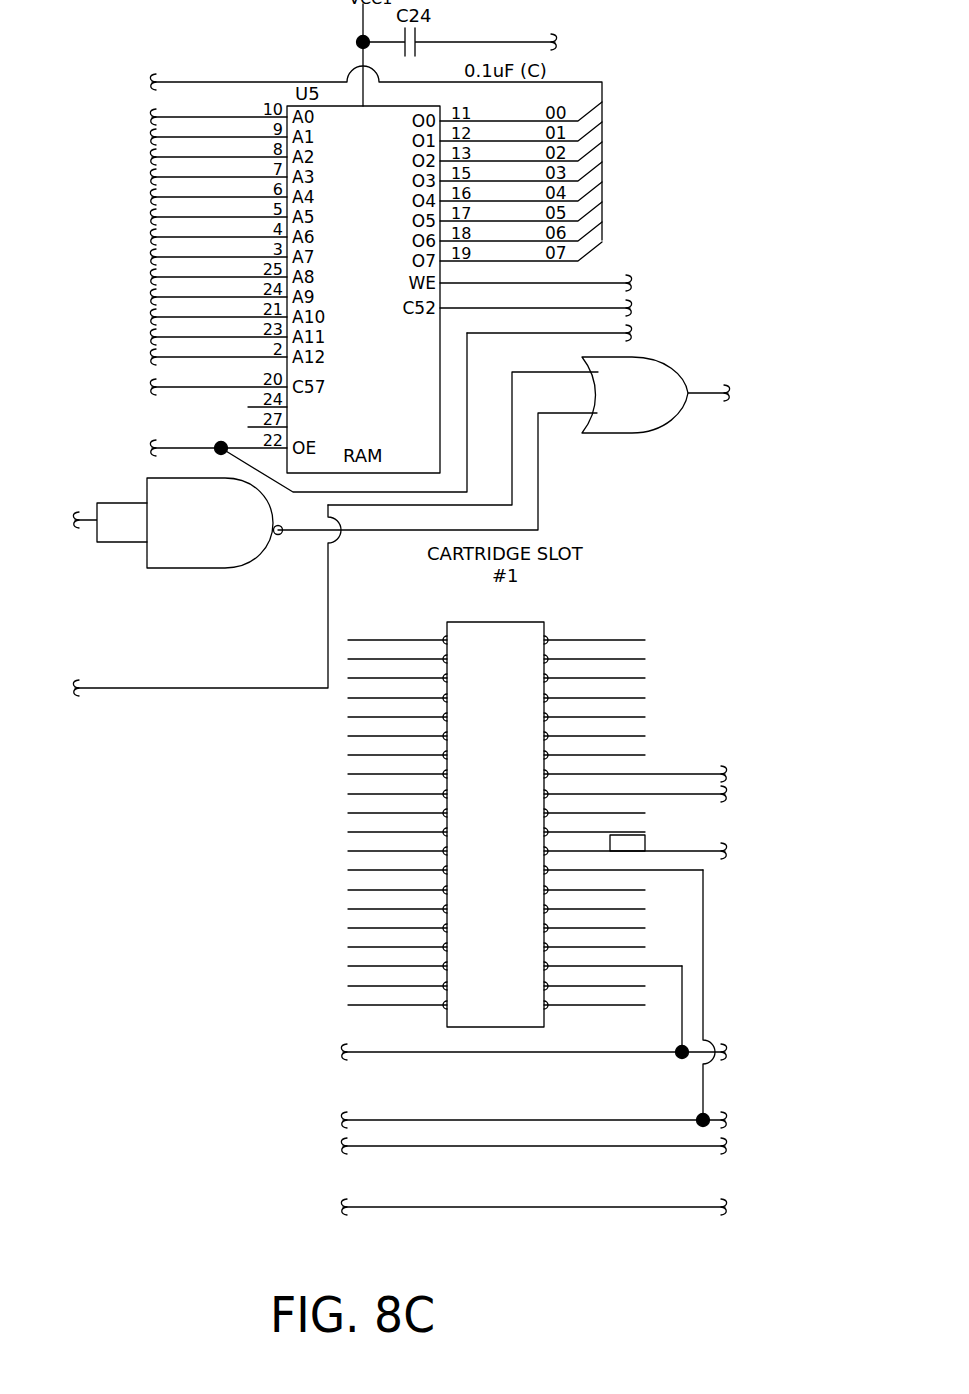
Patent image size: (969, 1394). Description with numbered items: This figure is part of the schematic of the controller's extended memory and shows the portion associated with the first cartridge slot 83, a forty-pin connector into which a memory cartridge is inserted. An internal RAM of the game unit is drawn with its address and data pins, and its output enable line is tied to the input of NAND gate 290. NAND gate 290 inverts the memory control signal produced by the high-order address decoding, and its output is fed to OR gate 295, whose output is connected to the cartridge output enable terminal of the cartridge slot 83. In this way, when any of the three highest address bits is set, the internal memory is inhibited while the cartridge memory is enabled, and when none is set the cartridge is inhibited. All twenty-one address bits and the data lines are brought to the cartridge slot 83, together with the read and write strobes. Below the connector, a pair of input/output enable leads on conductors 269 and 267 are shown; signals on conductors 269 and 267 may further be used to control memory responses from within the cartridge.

The NAND gate 290 is at (147, 555).
The OR gate 295 is at (668, 361).
The cartridge slot 83 is at (447, 622).
The conductor 269 is at (558, 1052).
The conductor 267 is at (630, 1120).